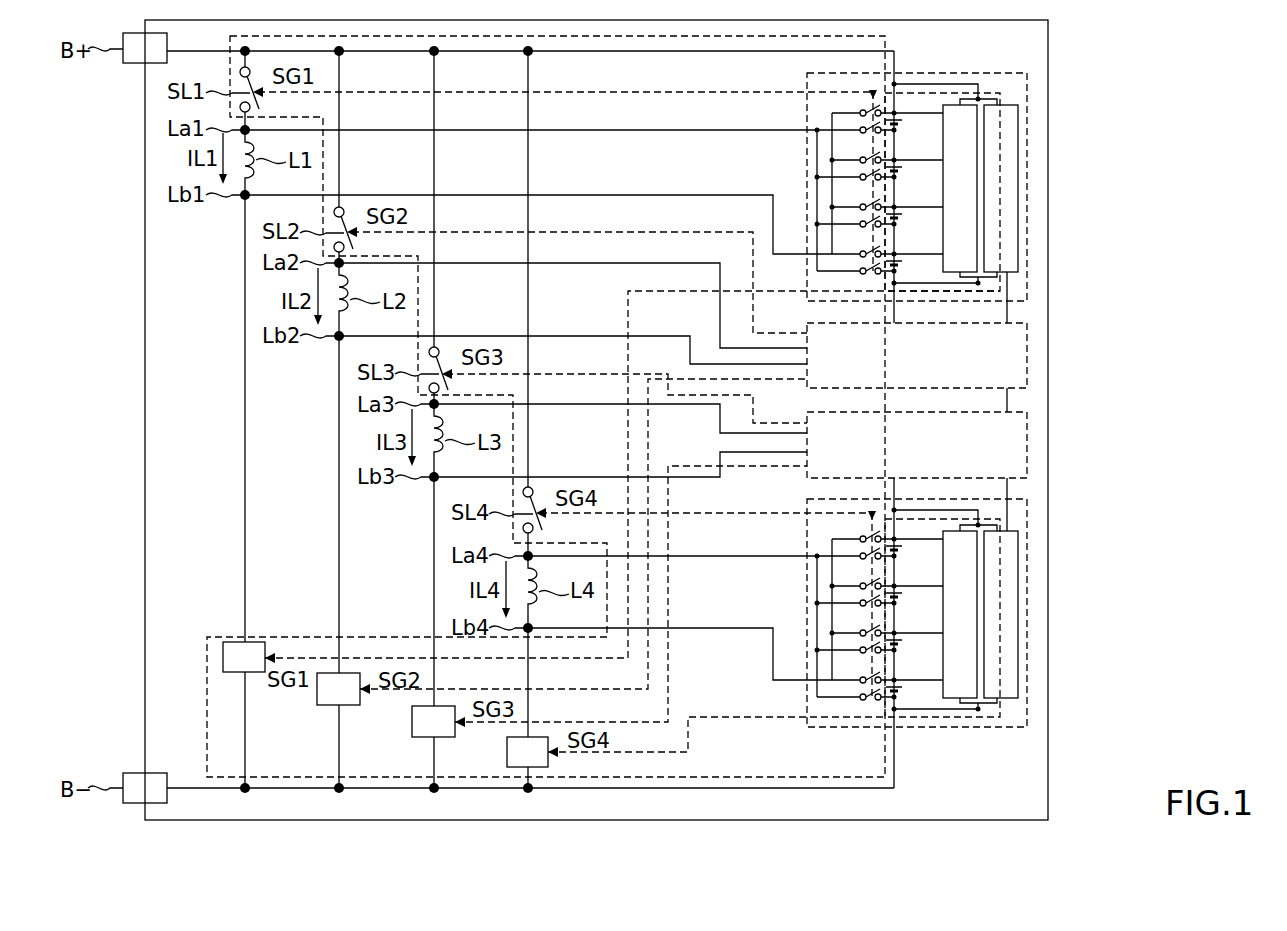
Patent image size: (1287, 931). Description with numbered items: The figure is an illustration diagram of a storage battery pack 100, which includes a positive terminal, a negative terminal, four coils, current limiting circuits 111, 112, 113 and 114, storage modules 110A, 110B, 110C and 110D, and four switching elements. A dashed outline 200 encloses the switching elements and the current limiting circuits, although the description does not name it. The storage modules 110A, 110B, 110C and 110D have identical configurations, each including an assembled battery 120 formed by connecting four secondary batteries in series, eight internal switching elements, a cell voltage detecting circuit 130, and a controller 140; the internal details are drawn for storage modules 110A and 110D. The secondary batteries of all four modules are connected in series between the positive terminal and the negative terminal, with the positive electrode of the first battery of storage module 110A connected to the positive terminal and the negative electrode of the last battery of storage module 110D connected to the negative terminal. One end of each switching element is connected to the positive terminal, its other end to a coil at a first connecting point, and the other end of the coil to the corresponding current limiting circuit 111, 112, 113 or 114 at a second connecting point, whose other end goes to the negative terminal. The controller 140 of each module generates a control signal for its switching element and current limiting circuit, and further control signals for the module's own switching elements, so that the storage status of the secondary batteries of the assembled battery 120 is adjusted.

The storage battery pack 100 is at (1049, 59).
The controller 200 is at (231, 34).
The storage module 110A is at (1030, 186).
The storage module 110B is at (1030, 355).
The storage module 110C is at (1030, 444).
The storage module 110D is at (1030, 612).
The current limiting circuit 111 is at (262, 673).
The current limiting circuit 112 is at (357, 706).
The current limiting circuit 113 is at (452, 738).
The current limiting circuit 114 is at (548, 763).
The assembled battery 120 is at (935, 145).
The cell voltage detecting circuit 130 is at (957, 103).
The controller 140 is at (1018, 103).